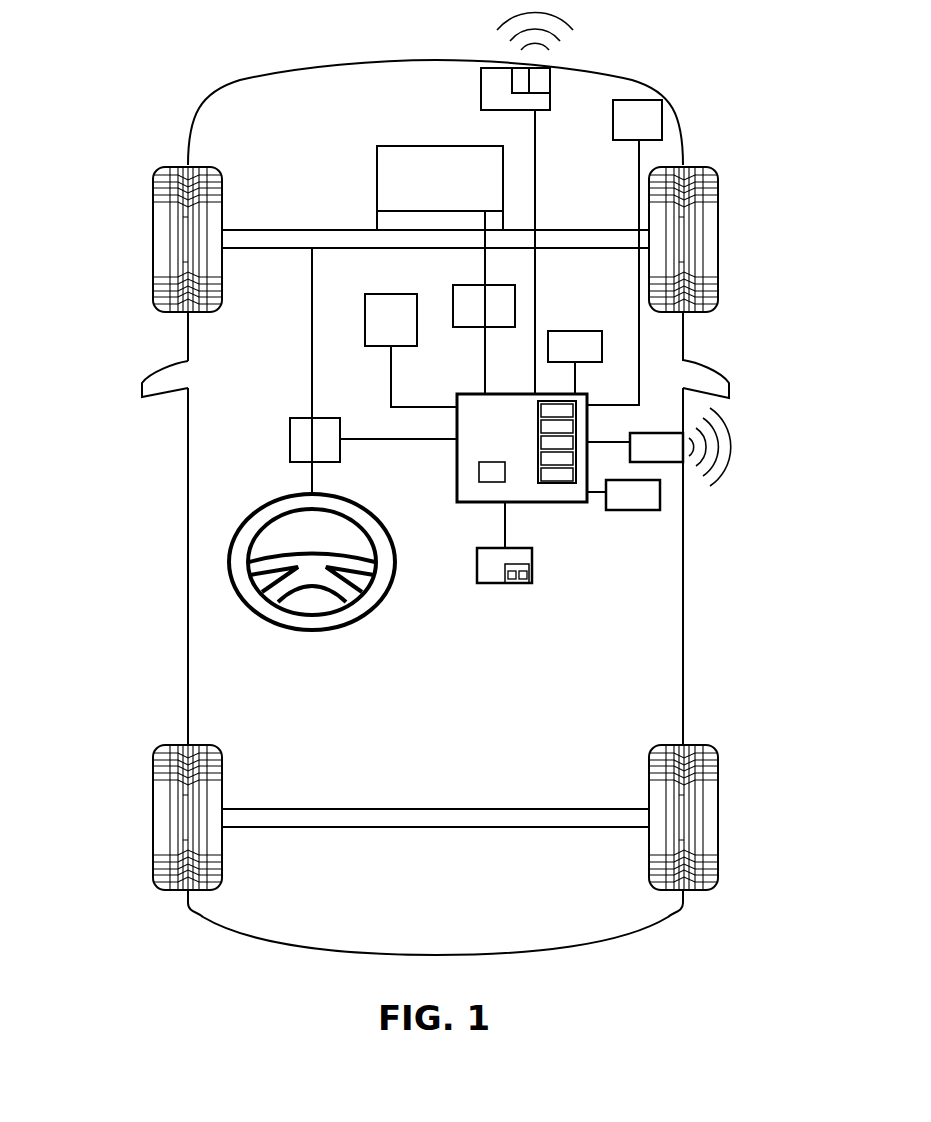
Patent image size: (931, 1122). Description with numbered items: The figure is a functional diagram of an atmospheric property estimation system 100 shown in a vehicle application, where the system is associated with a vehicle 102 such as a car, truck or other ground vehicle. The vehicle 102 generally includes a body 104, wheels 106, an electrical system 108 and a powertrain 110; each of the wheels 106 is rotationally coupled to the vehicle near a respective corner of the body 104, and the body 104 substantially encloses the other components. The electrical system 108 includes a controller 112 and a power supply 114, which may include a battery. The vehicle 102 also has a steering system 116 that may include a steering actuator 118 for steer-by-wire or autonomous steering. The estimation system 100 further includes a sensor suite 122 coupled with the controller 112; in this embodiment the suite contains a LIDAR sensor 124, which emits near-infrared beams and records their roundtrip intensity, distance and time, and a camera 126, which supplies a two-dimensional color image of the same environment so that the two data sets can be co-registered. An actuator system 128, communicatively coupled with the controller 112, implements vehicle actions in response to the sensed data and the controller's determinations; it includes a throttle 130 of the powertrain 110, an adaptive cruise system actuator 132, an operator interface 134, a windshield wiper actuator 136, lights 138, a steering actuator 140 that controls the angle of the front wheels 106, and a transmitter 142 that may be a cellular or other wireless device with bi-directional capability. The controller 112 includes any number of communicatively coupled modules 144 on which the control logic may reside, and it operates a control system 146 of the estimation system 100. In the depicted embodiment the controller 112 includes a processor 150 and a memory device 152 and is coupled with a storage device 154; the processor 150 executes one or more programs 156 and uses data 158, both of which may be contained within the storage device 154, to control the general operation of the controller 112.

The atmospheric property estimation system 100 is at (676, 354).
The vehicle 102 is at (576, 208).
The body 104 is at (188, 565).
The wheels 106 is at (153, 240).
The electrical system 108 is at (575, 326).
The powertrain 110 is at (397, 185).
The controller 112 is at (520, 472).
The power supply 114 is at (623, 495).
The steering system 116 is at (312, 349).
The steering actuator 118 is at (395, 562).
The sensor suite 122 is at (518, 203).
The LIDAR sensor 124 is at (505, 84).
The camera 126 is at (547, 83).
The actuator system 128 is at (670, 125).
The throttle 130 is at (377, 221).
The adaptive cruise system actuator 132 is at (454, 291).
The operator interface 134 is at (411, 350).
The windshield wiper actuator 136 is at (558, 311).
The lights 138 is at (624, 252).
The steering actuator 140 is at (290, 440).
The transmitter 142 is at (659, 447).
The modules 144 is at (569, 491).
The control system 146 is at (540, 584).
The processor 150 is at (550, 486).
The memory device 152 is at (479, 477).
The storage device 154 is at (527, 569).
The programs 156 is at (506, 580).
The data 158 is at (522, 583).